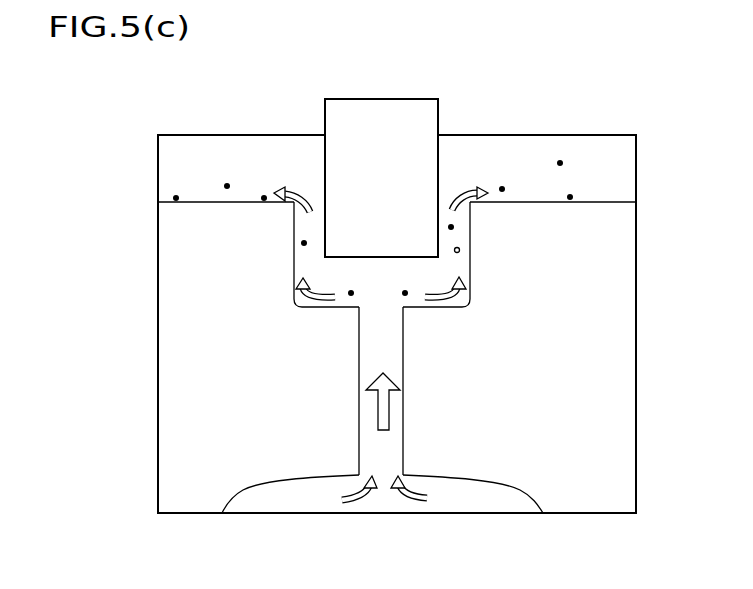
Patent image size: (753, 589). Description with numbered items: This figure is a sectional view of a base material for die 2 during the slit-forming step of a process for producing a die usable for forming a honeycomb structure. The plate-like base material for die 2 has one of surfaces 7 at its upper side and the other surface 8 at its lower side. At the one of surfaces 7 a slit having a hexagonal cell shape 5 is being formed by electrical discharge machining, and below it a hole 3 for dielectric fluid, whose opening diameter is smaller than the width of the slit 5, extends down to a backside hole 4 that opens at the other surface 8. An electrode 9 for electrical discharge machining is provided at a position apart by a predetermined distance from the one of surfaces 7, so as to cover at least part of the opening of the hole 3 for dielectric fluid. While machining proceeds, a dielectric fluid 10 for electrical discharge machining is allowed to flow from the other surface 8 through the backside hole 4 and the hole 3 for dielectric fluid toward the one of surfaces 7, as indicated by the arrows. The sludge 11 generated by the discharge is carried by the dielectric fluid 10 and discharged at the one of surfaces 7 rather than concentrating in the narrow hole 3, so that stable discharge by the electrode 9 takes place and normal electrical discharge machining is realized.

The base material for die 2 is at (617, 471).
The hole for dielectric fluid 3 is at (400, 413).
The backside hole 4 is at (495, 497).
The slit having a hexagonal cell shape 5 is at (465, 293).
The one of surfaces 7 is at (150, 182).
The other surface 8 is at (393, 312).
The electrode 9 is at (421, 108).
The dielectric fluid 10 is at (625, 185).
The sludge 11 is at (560, 163).